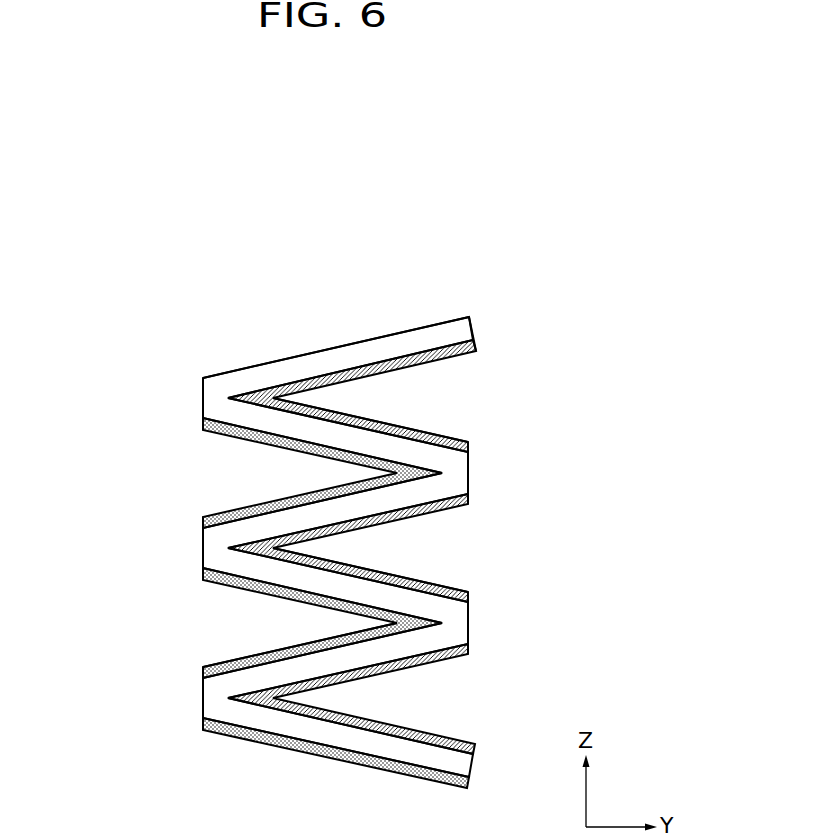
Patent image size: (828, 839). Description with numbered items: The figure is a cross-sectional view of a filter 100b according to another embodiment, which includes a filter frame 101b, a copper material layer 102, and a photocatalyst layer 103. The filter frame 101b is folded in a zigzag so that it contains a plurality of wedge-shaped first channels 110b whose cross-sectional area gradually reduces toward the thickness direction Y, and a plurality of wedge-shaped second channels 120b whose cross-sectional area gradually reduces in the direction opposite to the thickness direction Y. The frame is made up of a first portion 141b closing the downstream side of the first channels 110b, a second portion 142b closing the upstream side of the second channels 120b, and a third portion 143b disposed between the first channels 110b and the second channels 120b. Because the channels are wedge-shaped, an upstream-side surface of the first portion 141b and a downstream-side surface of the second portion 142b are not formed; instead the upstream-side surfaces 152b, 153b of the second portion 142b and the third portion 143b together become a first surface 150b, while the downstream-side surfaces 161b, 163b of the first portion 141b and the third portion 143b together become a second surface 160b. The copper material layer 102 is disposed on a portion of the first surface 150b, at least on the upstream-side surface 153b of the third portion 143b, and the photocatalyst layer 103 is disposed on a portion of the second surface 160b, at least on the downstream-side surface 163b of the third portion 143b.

The filter 100b is at (606, 252).
The filter frame 101b is at (489, 312).
The copper material layer 102 is at (211, 514).
The photocatalyst layer 103 is at (445, 434).
The wedge-shaped first channels 110b is at (238, 444).
The wedge-shaped second channels 120b is at (434, 370).
The first portion 141b is at (462, 473).
The second portion 142b is at (211, 398).
The third portion 143b is at (345, 351).
The first surface 150b is at (110, 643).
The upstream-side surface of the second portion 152b is at (206, 697).
The upstream-side surface of the third portion 153b is at (232, 660).
The second surface 160b is at (563, 570).
The downstream-side surface of the first portion 161b is at (462, 621).
The downstream-side surface of the third portion 163b is at (443, 586).